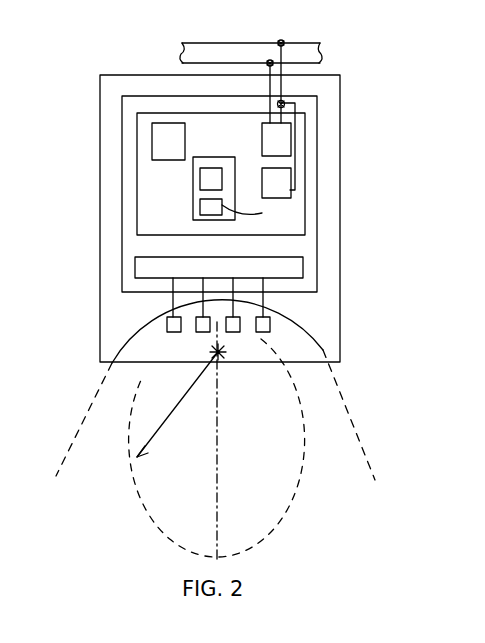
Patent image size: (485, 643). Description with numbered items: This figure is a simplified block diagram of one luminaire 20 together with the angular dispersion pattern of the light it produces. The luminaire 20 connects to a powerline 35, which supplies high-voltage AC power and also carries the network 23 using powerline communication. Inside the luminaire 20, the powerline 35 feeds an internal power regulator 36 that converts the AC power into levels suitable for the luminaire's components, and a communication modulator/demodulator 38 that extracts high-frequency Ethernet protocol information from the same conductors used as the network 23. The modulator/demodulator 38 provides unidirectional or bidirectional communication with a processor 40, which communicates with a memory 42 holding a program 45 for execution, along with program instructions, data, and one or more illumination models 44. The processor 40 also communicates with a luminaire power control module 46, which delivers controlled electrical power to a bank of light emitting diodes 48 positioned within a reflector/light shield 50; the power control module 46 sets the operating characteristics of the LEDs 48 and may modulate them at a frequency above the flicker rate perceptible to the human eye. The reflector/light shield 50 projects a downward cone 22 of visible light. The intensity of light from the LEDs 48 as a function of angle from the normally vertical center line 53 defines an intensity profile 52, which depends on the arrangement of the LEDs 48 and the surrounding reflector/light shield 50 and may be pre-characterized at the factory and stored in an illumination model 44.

The luminaire 20 is at (85, 80).
The downward cone 22 is at (357, 430).
The network 23 is at (225, 32).
The powerline 35 is at (298, 61).
The internal power regulator 36 is at (262, 150).
The communication modulator/demodulator 38 is at (292, 191).
The processor 40 is at (152, 140).
The memory 42 is at (200, 173).
The illumination model 44 is at (200, 200).
The program 45 is at (262, 213).
The luminaire power control module 46 is at (303, 268).
The light emitting diodes 48 is at (203, 333).
The reflector/light shield 50 is at (297, 318).
The intensity profile 52 is at (303, 460).
The center line 53 is at (218, 422).